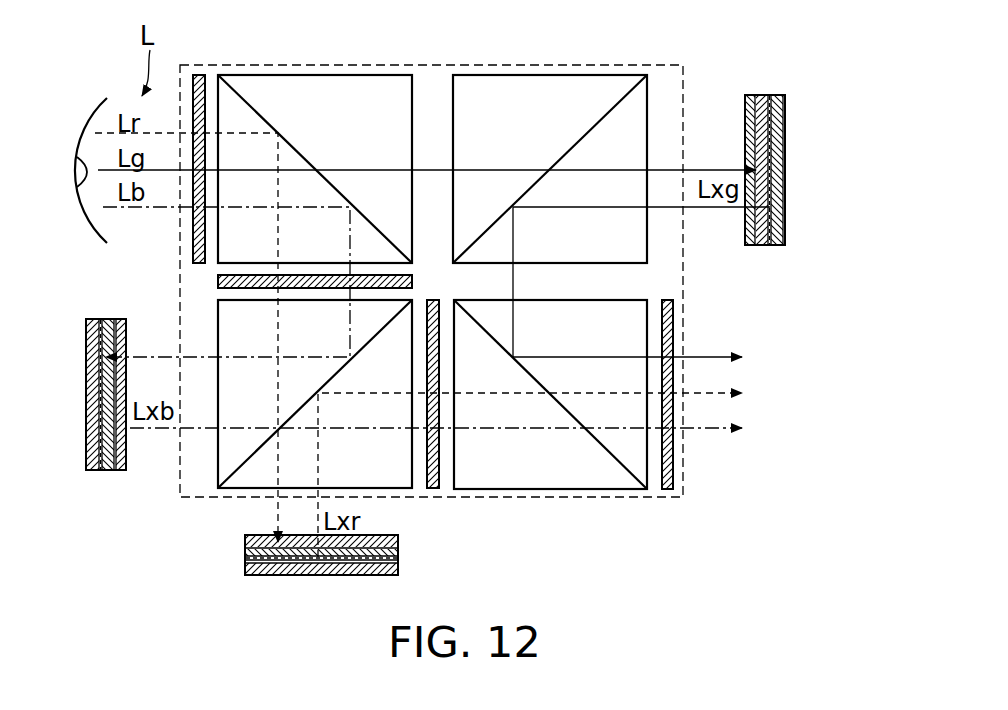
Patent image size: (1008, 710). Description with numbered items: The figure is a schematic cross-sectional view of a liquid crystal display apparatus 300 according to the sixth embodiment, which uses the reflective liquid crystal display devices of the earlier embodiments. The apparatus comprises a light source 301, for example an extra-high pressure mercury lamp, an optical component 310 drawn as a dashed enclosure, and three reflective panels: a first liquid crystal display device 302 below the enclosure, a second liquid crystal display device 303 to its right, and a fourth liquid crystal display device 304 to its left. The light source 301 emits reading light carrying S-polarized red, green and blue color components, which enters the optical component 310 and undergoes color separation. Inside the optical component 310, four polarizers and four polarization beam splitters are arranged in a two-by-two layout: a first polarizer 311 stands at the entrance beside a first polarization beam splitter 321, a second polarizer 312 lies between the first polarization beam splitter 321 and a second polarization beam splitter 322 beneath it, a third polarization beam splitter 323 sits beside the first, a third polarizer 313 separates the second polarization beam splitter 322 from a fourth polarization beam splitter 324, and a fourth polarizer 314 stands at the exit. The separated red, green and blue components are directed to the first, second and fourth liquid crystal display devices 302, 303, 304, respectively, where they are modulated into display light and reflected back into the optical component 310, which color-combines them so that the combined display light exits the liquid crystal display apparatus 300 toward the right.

The liquid crystal display apparatus 300 is at (639, 34).
The light source 301 is at (85, 215).
The first liquid crystal display device 302 is at (312, 576).
The second liquid crystal display device 303 is at (786, 168).
The fourth liquid crystal display device 304 is at (86, 392).
The optical component 310 is at (580, 498).
The first polarizer 311 is at (199, 74).
The second polarizer 312 is at (218, 282).
The third polarizer 313 is at (432, 490).
The fourth polarizer 314 is at (667, 490).
The first polarization beam splitter 321 is at (327, 74).
The second polarization beam splitter 322 is at (230, 496).
The third polarization beam splitter 323 is at (537, 74).
The fourth polarization beam splitter 324 is at (505, 490).